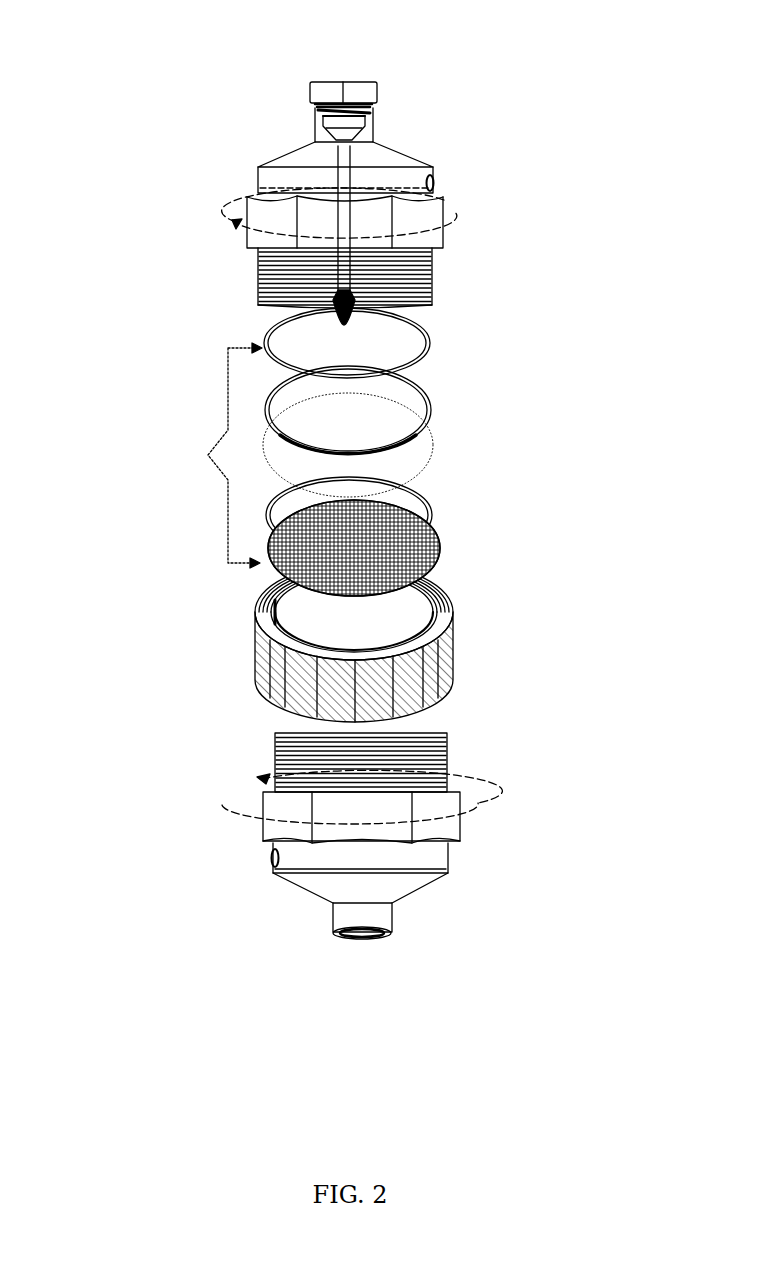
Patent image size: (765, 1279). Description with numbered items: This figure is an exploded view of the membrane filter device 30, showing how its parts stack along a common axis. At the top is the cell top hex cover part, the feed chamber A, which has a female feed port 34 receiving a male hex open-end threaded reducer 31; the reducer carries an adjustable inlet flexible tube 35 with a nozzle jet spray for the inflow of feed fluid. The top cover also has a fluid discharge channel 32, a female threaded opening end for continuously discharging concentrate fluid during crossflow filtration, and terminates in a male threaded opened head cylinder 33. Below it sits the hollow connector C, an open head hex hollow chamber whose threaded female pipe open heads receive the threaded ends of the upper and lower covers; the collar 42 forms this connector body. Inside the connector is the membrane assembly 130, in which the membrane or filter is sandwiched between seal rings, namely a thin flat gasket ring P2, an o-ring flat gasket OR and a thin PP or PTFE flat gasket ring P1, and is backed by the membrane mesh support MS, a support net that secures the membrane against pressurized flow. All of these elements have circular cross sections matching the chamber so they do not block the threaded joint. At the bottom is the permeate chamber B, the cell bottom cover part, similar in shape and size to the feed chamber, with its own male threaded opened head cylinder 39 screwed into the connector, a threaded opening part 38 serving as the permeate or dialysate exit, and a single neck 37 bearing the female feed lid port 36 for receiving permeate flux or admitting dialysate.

The membrane filter device 30 is at (457, 117).
The feed chamber A is at (457, 173).
The male hex open-end threaded reducer 31 is at (347, 75).
The female feed port 34 is at (313, 113).
The adjustable inlet flexible tube 35 is at (330, 195).
The fluid discharge channel 32 is at (434, 187).
The male threaded opened head cylinder 33 is at (431, 277).
The membrane assembly 130 is at (205, 455).
The flat gasket ring P2 is at (440, 346).
The o-ring flat gasket OR is at (263, 393).
The thin PP or PTFE flat gasket ring P1 is at (260, 500).
The membrane mesh support MS is at (445, 556).
The hollow connector C is at (254, 635).
The threaded collar 42 is at (447, 590).
The permeate chamber B is at (480, 869).
The male threaded opened head cylinder 39 is at (275, 763).
The threaded opening part 38 is at (275, 865).
The single neck 37 is at (333, 920).
The female feed lid port 36 is at (363, 937).